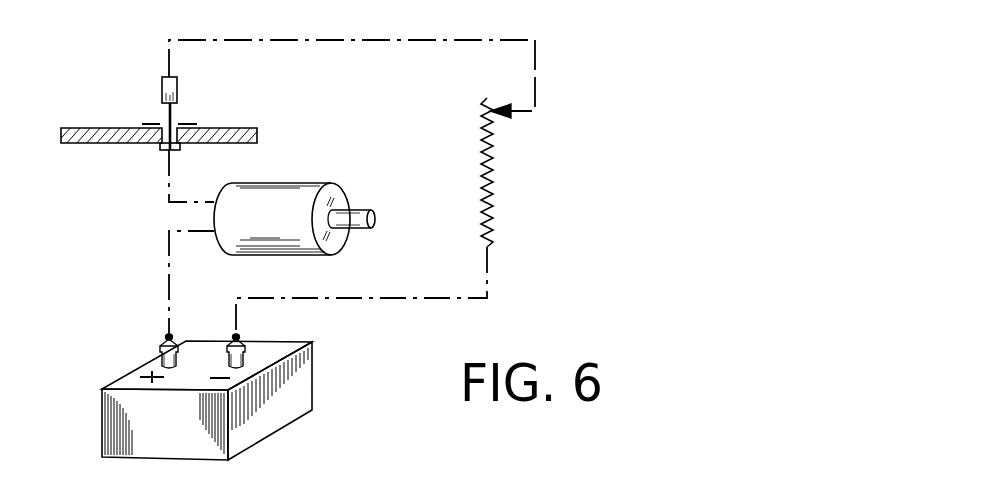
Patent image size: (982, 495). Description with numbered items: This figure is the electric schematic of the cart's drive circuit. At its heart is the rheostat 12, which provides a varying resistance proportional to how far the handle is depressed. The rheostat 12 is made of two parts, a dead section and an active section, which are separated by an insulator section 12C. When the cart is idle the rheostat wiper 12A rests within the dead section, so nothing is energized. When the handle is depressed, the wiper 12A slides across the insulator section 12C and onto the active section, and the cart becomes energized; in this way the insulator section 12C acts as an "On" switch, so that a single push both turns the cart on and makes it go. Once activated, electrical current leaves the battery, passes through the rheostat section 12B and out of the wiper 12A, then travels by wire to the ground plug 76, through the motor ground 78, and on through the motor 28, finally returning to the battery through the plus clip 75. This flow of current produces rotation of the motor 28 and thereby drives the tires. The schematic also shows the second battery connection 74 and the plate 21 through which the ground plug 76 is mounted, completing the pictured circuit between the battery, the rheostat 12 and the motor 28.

The rheostat 12 is at (482, 204).
The rheostat wiper 12A is at (520, 113).
The rheostat section 12B is at (491, 203).
The insulator section 12C is at (491, 152).
The plate / panel 21 is at (73, 128).
The motor 28 is at (293, 183).
The battery negative terminal 74 is at (244, 345).
The plus clip 75 is at (162, 345).
The ground plug 76 is at (163, 90).
The motor ground 78 is at (168, 191).